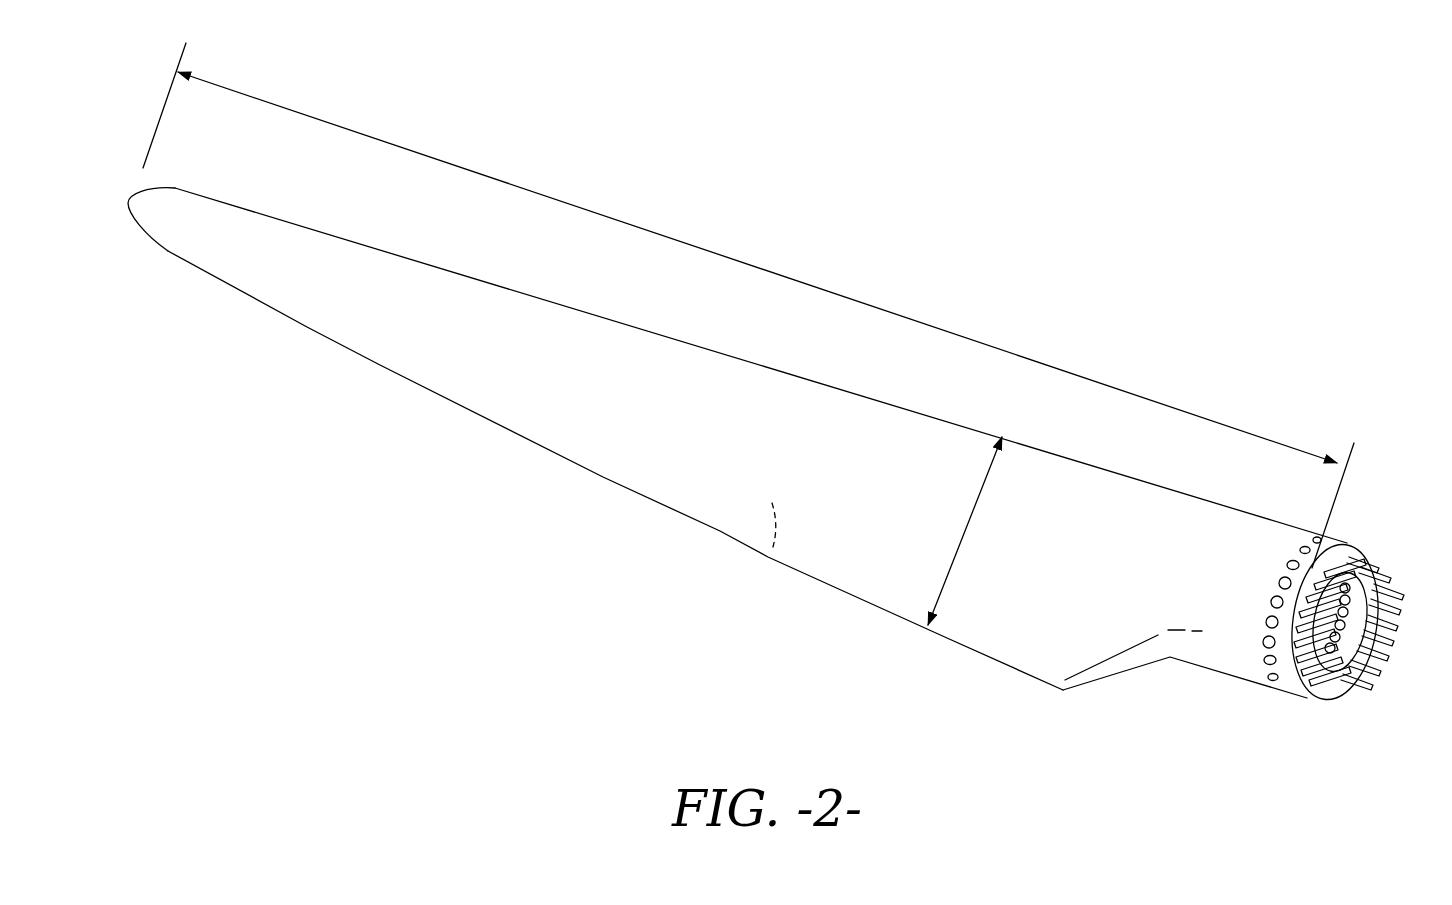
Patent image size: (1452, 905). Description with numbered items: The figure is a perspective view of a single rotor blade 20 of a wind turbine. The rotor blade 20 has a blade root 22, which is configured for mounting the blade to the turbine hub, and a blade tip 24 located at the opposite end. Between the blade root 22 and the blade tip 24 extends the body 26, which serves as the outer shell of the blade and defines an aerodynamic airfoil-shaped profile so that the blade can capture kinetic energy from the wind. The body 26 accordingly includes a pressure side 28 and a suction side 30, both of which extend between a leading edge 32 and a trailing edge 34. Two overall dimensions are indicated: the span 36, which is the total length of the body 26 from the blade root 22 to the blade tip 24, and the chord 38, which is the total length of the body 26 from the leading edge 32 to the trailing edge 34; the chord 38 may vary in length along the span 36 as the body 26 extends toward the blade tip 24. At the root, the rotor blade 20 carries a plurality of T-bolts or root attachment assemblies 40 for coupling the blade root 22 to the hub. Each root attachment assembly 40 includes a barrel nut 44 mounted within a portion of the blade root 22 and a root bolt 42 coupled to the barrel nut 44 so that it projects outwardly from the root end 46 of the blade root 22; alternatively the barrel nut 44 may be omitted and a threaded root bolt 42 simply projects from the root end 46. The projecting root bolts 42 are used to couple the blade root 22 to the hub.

The rotor blade 20 is at (1198, 293).
The blade root 22 is at (1257, 670).
The blade tip 24 is at (128, 203).
The body 26 is at (593, 350).
The pressure side 28 is at (768, 557).
The suction side 30 is at (470, 370).
The leading edge 32 is at (823, 382).
The trailing edge 34 is at (603, 477).
The span 36 is at (800, 282).
The chord 38 is at (960, 542).
The root attachment assembly 40 is at (1257, 618).
The root bolt 42 is at (1405, 620).
The barrel nut 44 is at (1262, 641).
The root end 46 is at (1313, 697).